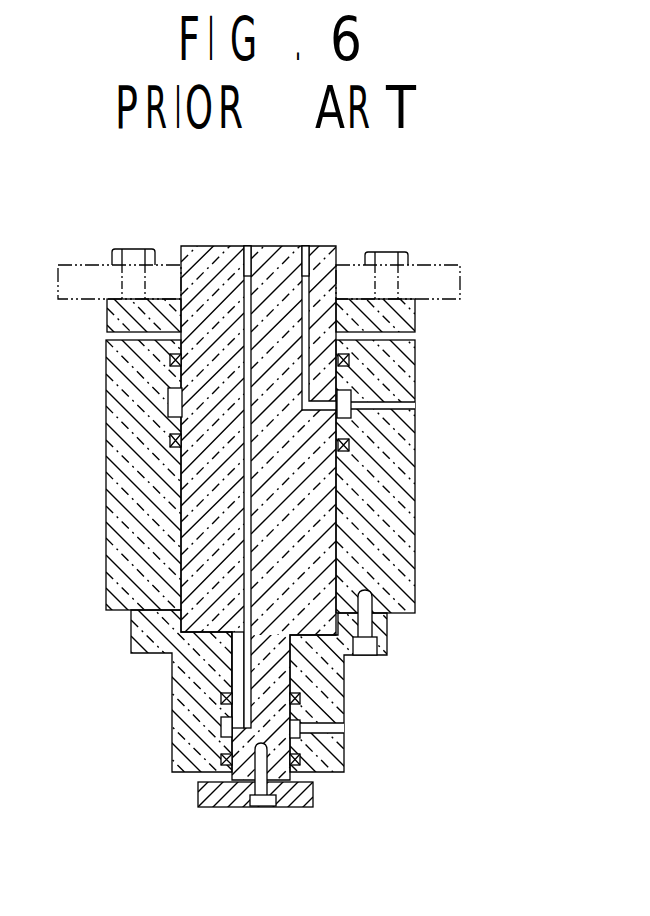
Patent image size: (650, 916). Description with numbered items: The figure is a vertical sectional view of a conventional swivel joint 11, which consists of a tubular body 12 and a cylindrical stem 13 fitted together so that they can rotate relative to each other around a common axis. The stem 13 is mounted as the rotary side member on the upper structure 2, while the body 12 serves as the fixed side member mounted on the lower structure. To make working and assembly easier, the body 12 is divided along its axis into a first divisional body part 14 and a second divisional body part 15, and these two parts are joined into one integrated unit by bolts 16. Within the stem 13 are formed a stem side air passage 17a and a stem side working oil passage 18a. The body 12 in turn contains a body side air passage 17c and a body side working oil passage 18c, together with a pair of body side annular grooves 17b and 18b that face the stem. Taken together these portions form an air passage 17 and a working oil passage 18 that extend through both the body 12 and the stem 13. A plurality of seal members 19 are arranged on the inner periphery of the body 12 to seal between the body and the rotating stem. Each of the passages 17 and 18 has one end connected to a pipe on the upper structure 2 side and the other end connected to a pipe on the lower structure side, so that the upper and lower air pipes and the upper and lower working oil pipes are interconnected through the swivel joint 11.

The upper structure 2 is at (430, 258).
The swivel joint 11 is at (425, 524).
The tubular body 12 is at (232, 453).
The cylindrical stem 13 is at (280, 240).
The first divisional body part 14 is at (108, 426).
The second divisional body part 15 is at (172, 692).
The bolts 16 is at (366, 648).
The air passage 17 is at (260, 482).
The stem side air passage 17a is at (248, 246).
The body side annular groove 17b is at (222, 727).
The body side air passage 17c is at (344, 729).
The working oil passage 18 is at (296, 344).
The stem side working oil passage 18a is at (306, 247).
The body side annular groove 18b is at (168, 400).
The body side working oil passage 18c is at (415, 406).
The seal members 19 is at (170, 441).